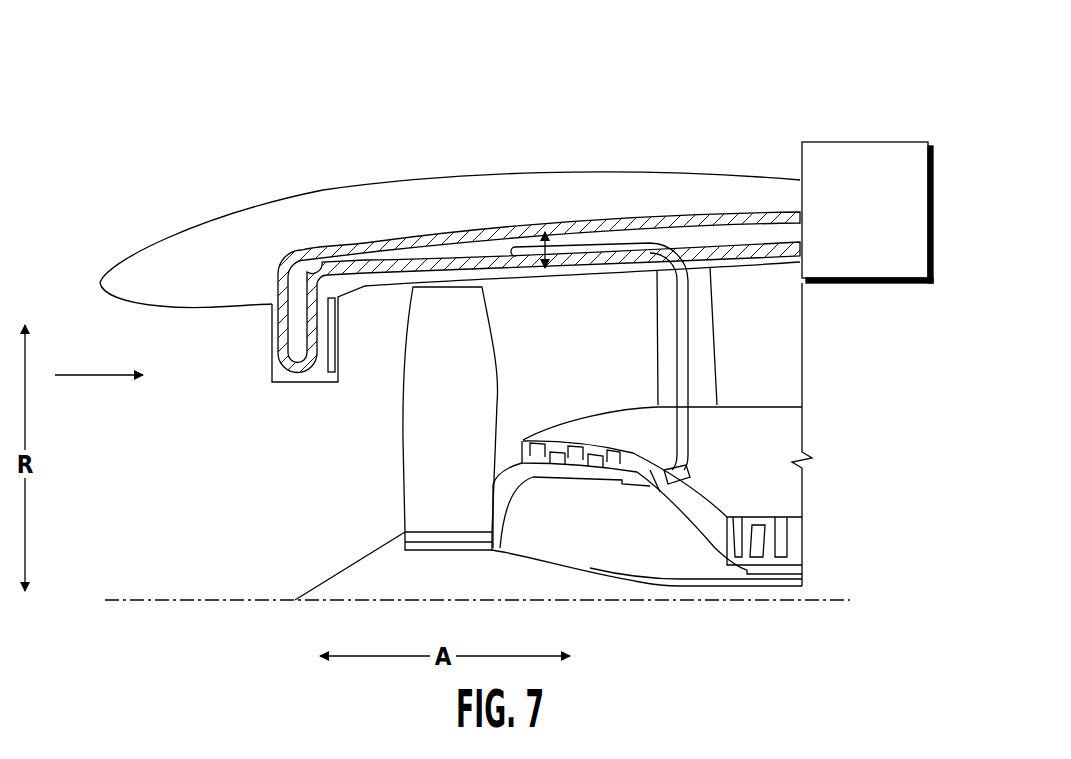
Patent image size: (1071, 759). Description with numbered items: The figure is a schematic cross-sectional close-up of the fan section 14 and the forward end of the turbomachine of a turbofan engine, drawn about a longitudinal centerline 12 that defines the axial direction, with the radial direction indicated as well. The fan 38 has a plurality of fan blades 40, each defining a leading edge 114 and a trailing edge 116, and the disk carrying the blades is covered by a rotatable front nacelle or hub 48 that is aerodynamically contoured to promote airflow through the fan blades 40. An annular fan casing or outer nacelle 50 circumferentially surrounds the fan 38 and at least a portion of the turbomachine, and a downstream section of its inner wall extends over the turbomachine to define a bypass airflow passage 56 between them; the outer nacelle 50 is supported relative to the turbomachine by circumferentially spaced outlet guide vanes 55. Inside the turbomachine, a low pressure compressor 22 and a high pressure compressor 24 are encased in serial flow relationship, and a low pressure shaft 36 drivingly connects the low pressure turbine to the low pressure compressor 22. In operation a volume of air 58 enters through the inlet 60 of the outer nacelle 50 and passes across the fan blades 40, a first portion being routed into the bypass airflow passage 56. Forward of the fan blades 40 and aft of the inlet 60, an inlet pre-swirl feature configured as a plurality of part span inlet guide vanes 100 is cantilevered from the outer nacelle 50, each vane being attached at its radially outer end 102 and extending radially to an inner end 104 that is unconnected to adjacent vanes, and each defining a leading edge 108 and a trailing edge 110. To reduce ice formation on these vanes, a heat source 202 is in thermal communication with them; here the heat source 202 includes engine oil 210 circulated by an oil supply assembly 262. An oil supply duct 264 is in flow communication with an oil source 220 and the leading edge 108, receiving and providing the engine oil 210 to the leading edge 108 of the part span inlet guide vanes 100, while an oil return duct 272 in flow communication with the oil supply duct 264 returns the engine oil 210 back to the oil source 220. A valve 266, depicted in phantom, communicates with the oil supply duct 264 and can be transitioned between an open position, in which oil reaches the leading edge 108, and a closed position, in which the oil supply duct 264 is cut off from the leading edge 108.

The longitudinal centerline 12 is at (177, 600).
The fan section 14 is at (330, 208).
The low pressure compressor 22 is at (643, 443).
The high pressure compressor 24 is at (757, 503).
The low pressure shaft 36 is at (653, 587).
The fan 38 is at (470, 242).
The fan blade 40 is at (482, 403).
The hub 48 is at (313, 588).
The outer nacelle 50 is at (433, 180).
The outlet guide vane 55 is at (702, 352).
The bypass airflow passage 56 is at (598, 367).
The volume of air 58 is at (110, 376).
The inlet 60 is at (90, 333).
The part span inlet guide vane 100 is at (273, 288).
The outer end 102 is at (323, 260).
The inner end 104 is at (303, 397).
The leading edge 108 is at (243, 368).
The trailing edge 110 is at (373, 392).
The leading edge 114 is at (393, 388).
The trailing edge 116 is at (498, 370).
The heat source 202 is at (877, 285).
The engine oil 210 is at (415, 250).
The oil source 220 is at (920, 140).
The oil supply assembly 262 is at (627, 215).
The oil supply duct 264 is at (465, 248).
The valve 266 is at (545, 230).
The oil return duct 272 is at (587, 265).